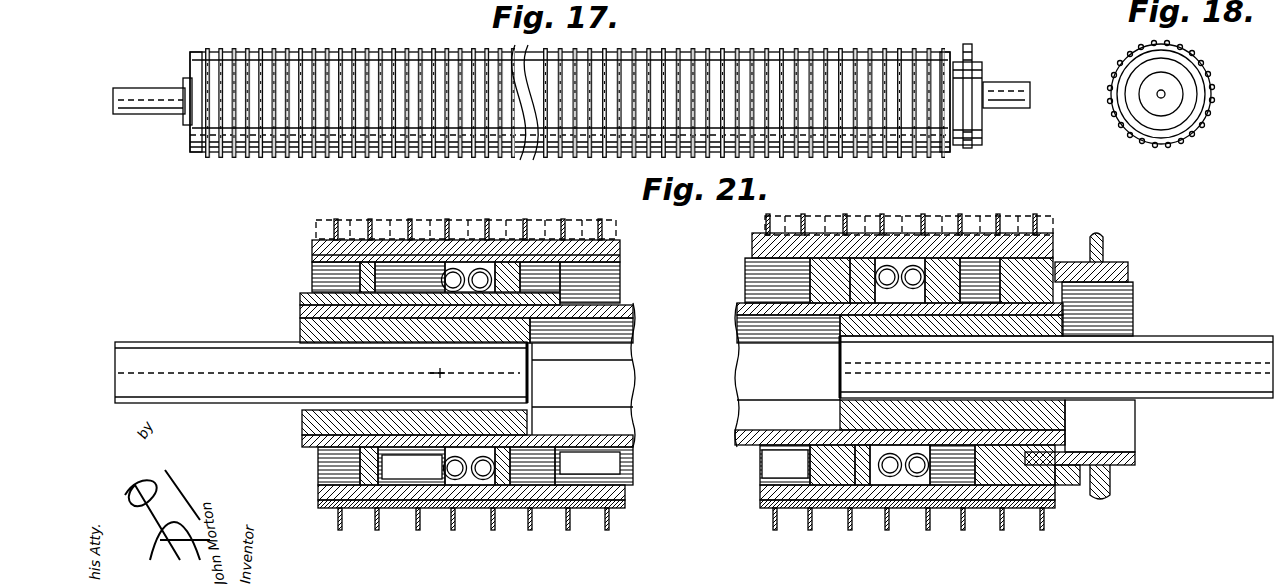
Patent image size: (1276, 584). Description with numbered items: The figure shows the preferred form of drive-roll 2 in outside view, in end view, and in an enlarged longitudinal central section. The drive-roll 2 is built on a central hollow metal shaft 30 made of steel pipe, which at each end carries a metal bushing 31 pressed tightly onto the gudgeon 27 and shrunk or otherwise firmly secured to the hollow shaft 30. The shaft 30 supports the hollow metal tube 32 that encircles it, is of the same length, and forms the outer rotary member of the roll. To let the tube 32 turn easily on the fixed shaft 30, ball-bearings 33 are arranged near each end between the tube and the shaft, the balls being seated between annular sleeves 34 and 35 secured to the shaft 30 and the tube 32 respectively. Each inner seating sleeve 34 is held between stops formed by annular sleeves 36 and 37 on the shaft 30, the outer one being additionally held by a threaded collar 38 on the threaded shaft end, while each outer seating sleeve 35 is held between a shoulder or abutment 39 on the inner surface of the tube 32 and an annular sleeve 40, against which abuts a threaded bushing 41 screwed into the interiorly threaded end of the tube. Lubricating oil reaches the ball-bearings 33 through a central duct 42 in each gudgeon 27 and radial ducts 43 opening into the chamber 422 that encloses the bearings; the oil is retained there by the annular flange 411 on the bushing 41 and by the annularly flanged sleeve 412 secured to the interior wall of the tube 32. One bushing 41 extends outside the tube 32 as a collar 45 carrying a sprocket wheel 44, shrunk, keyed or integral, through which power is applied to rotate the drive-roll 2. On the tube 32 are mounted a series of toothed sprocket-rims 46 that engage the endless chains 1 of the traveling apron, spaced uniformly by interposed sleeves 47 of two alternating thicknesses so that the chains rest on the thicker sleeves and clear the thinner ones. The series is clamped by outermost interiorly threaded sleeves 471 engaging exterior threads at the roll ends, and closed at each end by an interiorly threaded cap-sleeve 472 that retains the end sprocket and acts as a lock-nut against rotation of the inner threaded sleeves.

In FIG. 21, the endless chains 1 is at (315, 222).
In FIG. 17, the drive-roll 2 is at (757, 70).
In FIG. 21, the drive-roll 2 is at (652, 365).
In FIG. 17, the gudgeon 27 is at (140, 92).
In FIG. 18, the gudgeon 27 is at (1166, 90).
In FIG. 21, the gudgeon 27 is at (232, 345).
In FIG. 21, the hollow metal shaft 30 is at (740, 312).
In FIG. 18, the metal bushing 31 is at (1148, 92).
In FIG. 21, the metal bushing 31 is at (305, 427).
In FIG. 18, the hollow metal tube 32 is at (1122, 120).
In FIG. 21, the hollow metal tube 32 is at (748, 250).
In FIG. 21, the ball-bearings 33 is at (468, 272).
In FIG. 21, the annular seating sleeve 34 is at (468, 296).
In FIG. 21, the annular seating sleeve 35 is at (493, 266).
In FIG. 21, the annular sleeve 36 is at (430, 306).
In FIG. 21, the annular sleeve 37 is at (525, 302).
In FIG. 21, the threaded collar 38 is at (302, 442).
In FIG. 21, the shoulder or abutment 39 is at (500, 262).
In FIG. 21, the annular sleeve 40 is at (393, 262).
In FIG. 18, the threaded bushing 41 is at (1130, 128).
In FIG. 21, the threaded bushing 41 is at (312, 262).
In FIG. 21, the central lubricating duct 42 is at (186, 373).
In FIG. 21, the radial duct 43 is at (441, 374).
In FIG. 17, the sprocket wheel 44 is at (967, 45).
In FIG. 21, the sprocket wheel 44 is at (1112, 480).
In FIG. 17, the collar 45 is at (980, 72).
In FIG. 21, the collar 45 is at (1120, 440).
In FIG. 17, the sprocket rims 46 is at (462, 46).
In FIG. 18, the sprocket rims 46 is at (1135, 52).
In FIG. 21, the sprocket rims 46 is at (447, 222).
In FIG. 17, the sleeves 47 is at (700, 57).
In FIG. 21, the sleeves 47 is at (585, 222).
In FIG. 21, the annular flange 411 is at (362, 470).
In FIG. 21, the annularly flanged sleeve 412 is at (600, 472).
In FIG. 21, the chamber 422 is at (440, 470).
In FIG. 17, the threaded sleeves 471 is at (295, 55).
In FIG. 21, the threaded sleeves 471 is at (342, 240).
In FIG. 17, the cap-sleeve 472 is at (198, 50).
In FIG. 21, the cap-sleeve 472 is at (312, 243).